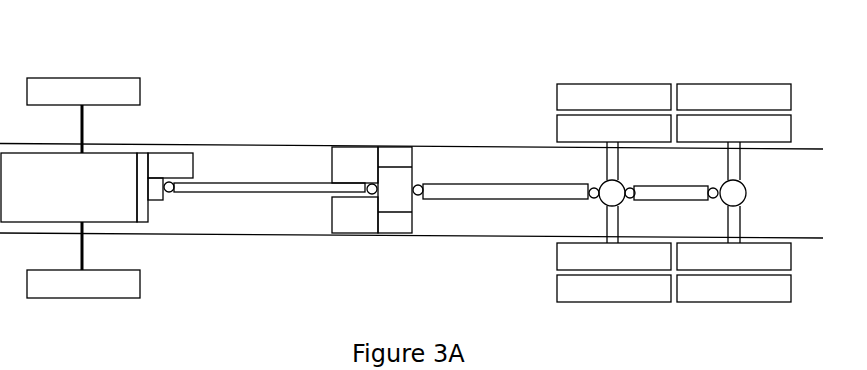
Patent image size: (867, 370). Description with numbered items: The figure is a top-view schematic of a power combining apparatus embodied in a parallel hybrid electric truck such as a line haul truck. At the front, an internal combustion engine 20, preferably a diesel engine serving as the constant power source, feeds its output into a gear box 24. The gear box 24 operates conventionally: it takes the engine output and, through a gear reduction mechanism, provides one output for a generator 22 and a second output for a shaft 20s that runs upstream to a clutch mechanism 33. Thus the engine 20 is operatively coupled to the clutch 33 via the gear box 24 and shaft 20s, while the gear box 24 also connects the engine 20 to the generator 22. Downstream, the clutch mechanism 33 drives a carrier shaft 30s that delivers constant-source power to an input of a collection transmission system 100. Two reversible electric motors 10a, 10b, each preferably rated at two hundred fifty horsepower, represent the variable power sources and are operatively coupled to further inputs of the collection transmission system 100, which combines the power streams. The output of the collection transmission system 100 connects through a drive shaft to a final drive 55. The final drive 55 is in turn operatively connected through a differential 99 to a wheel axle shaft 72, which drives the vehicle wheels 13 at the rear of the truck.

The internal combustion engine 20 is at (85, 139).
The gear box 24 is at (187, 159).
The generator 22 is at (199, 150).
The shaft 20s is at (178, 223).
The clutch mechanism 33 is at (204, 227).
The reversible electric motor 10a is at (315, 127).
The reversible electric motor 10b is at (398, 234).
The collection transmission system 100 is at (434, 166).
The final drive 55 is at (506, 130).
The carrier shaft 30s is at (305, 253).
The vehicle wheels 13 is at (643, 161).
The differential 99 is at (672, 121).
The wheel axle shaft 72 is at (673, 240).